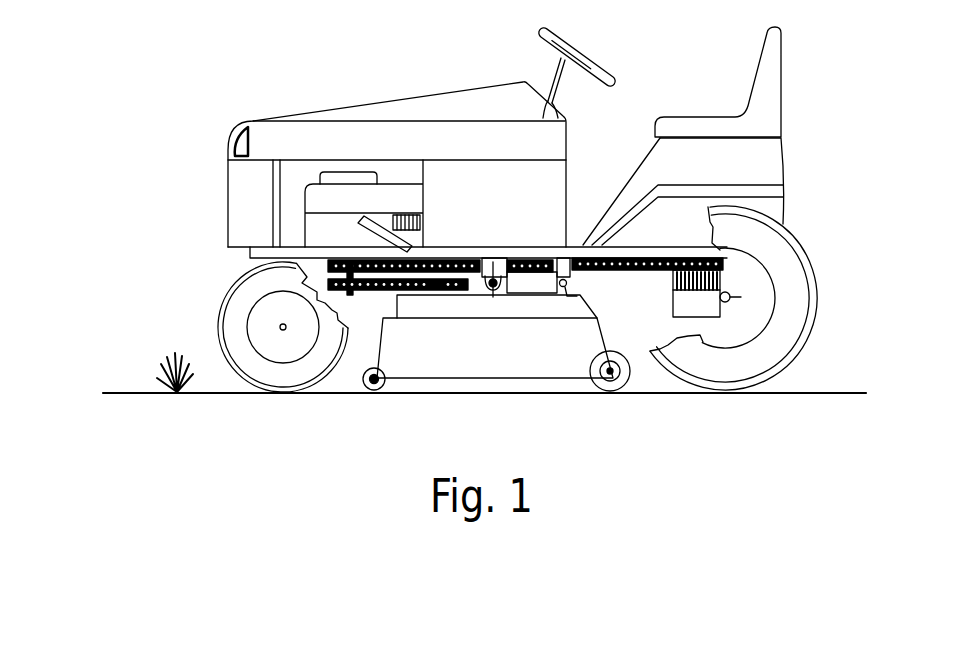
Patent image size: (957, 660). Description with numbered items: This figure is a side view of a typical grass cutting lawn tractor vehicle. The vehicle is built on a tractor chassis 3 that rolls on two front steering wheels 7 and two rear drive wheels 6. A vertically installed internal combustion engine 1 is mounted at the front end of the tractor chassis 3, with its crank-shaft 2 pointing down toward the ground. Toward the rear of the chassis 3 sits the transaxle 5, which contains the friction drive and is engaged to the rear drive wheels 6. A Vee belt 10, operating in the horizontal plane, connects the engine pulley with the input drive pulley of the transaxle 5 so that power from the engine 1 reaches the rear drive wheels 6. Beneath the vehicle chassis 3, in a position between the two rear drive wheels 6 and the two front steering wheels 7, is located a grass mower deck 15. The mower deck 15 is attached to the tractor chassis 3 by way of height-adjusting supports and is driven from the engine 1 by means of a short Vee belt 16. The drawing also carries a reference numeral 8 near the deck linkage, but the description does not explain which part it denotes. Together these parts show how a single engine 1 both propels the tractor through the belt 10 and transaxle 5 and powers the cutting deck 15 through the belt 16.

The internal combustion engine 1 is at (342, 195).
The crank-shaft 2 is at (342, 267).
The tractor chassis 3 is at (483, 258).
The transaxle 5 is at (674, 285).
The rear drive wheels 6 is at (790, 314).
The front steering wheels 7 is at (232, 316).
The pivot pin 8 is at (492, 291).
The Vee belt 10 is at (667, 258).
The grass mower deck 15 is at (543, 350).
The short Vee belt 16 is at (378, 291).